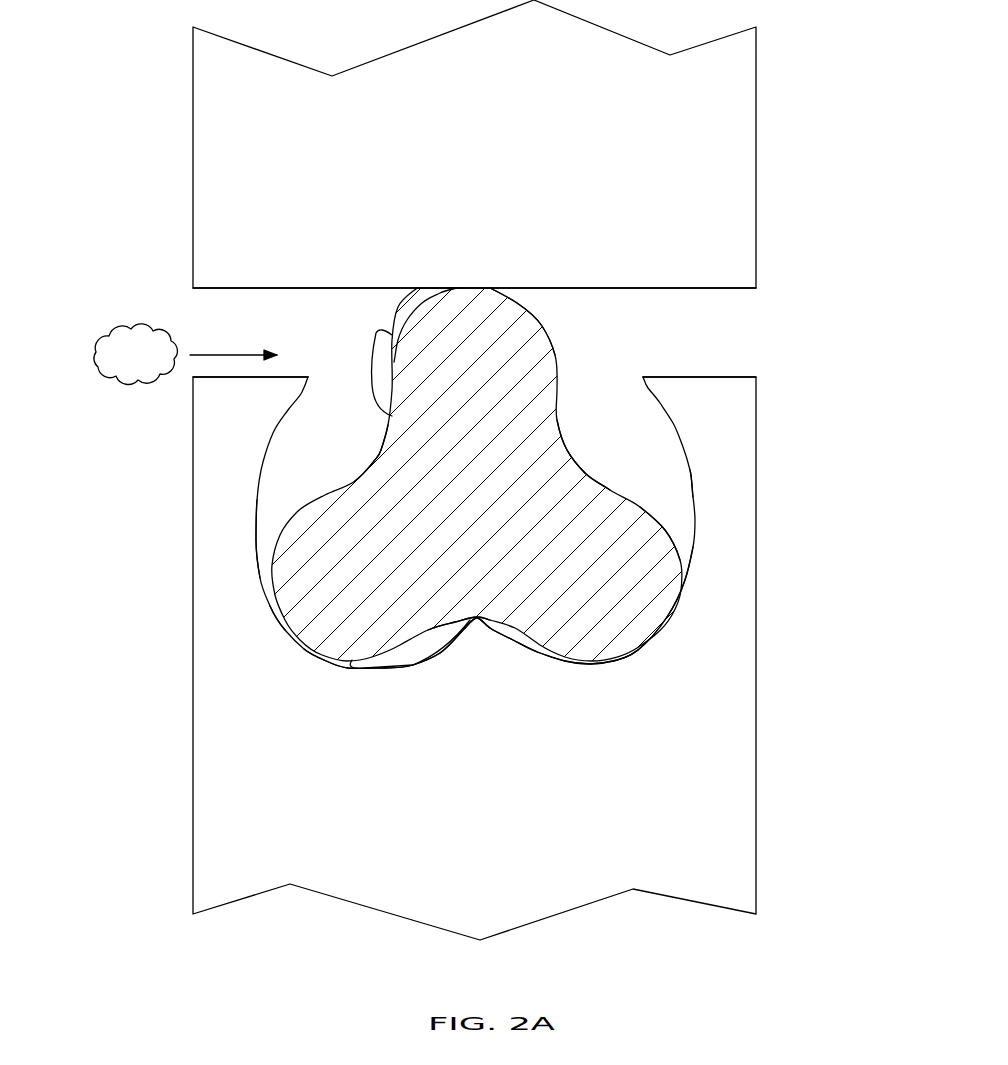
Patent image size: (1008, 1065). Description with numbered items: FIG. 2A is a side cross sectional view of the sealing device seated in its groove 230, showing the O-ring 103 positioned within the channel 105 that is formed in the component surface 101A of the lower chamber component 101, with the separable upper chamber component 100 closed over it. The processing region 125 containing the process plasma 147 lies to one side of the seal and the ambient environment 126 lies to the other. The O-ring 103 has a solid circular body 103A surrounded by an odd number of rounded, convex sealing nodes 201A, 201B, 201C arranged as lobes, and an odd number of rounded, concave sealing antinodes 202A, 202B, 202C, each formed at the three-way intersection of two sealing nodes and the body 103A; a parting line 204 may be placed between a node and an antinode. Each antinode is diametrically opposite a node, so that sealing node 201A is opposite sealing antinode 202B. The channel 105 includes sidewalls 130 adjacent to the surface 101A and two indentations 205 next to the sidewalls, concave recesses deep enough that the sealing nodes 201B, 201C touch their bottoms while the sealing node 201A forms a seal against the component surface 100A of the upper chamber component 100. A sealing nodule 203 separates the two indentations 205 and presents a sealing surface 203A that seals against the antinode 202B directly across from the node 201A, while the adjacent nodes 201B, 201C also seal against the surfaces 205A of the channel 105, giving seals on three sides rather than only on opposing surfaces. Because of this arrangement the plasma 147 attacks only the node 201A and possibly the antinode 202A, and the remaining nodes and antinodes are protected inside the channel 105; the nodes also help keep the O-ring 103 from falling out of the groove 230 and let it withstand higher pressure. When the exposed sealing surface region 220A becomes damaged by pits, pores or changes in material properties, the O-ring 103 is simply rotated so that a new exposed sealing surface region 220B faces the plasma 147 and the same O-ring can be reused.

The upper chamber component 100 is at (411, 142).
The component surface of the upper chamber component 100A is at (266, 288).
The lower chamber component 101 is at (586, 845).
The component surface of the lower chamber component 101A is at (740, 377).
The O-ring 103 is at (486, 449).
The solid circular body 103A is at (572, 466).
The channel 105 is at (697, 528).
The processing region 125 is at (68, 423).
The ambient environment 126 is at (886, 401).
The sidewalls 130 is at (692, 478).
The process plasma 147 is at (140, 366).
The sealing node 201A is at (475, 285).
The sealing node 201B is at (373, 670).
The sealing node 201C is at (667, 618).
The sealing antinode 202A is at (378, 458).
The sealing antinode 202B is at (481, 622).
The sealing antinode 202C is at (567, 449).
The sealing nodule 203 is at (478, 628).
The sealing surface 203A is at (478, 636).
The parting line 204 is at (548, 318).
The indentations 205 is at (690, 600).
The surface of the channel 205A is at (281, 627).
The exposed sealing surface region 220A is at (378, 329).
The new exposed sealing surface region 220B is at (404, 627).
The groove 230 is at (695, 573).